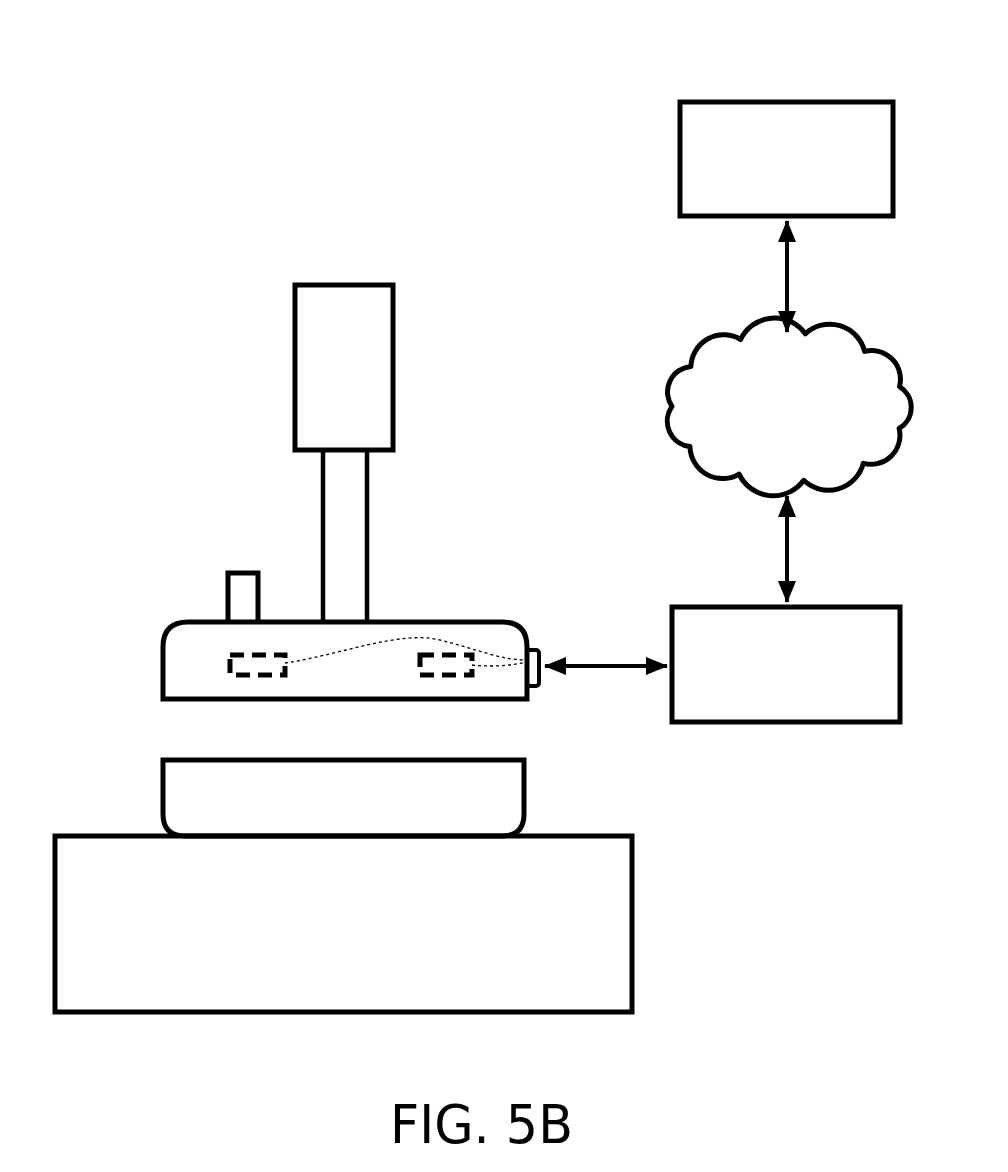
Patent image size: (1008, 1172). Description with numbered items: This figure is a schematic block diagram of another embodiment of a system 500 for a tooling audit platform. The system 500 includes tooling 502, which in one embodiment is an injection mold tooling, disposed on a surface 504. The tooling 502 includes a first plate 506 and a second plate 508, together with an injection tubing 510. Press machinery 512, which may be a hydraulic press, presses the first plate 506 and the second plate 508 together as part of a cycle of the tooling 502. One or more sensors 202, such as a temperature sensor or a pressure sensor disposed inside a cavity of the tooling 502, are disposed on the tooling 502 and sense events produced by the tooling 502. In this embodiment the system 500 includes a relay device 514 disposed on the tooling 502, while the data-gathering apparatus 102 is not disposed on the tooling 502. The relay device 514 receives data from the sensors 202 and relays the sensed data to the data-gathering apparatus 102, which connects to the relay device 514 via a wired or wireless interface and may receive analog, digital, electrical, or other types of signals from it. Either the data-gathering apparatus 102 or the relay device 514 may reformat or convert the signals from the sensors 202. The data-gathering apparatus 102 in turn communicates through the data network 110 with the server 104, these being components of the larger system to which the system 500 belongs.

The system 500 is at (140, 78).
The tooling 502 is at (103, 594).
The surface 504 is at (92, 852).
The first plate 506 is at (292, 635).
The second plate 508 is at (277, 822).
The injection tubing 510 is at (240, 592).
The press machinery 512 is at (260, 394).
The relay device 514 is at (534, 650).
The sensors 202 is at (240, 657).
The data-gathering apparatus 102 is at (765, 712).
The server 104 is at (766, 191).
The data network 110 is at (757, 452).